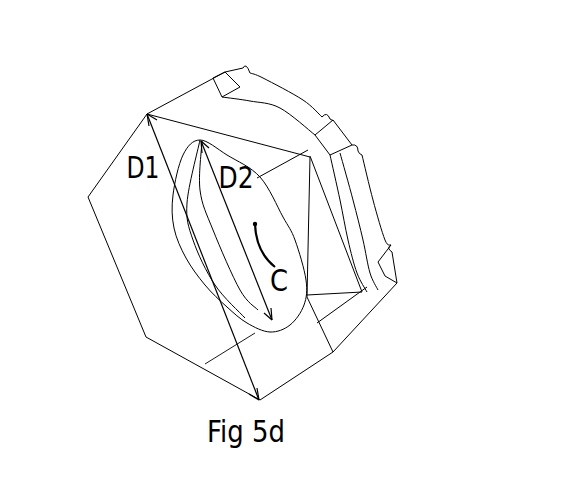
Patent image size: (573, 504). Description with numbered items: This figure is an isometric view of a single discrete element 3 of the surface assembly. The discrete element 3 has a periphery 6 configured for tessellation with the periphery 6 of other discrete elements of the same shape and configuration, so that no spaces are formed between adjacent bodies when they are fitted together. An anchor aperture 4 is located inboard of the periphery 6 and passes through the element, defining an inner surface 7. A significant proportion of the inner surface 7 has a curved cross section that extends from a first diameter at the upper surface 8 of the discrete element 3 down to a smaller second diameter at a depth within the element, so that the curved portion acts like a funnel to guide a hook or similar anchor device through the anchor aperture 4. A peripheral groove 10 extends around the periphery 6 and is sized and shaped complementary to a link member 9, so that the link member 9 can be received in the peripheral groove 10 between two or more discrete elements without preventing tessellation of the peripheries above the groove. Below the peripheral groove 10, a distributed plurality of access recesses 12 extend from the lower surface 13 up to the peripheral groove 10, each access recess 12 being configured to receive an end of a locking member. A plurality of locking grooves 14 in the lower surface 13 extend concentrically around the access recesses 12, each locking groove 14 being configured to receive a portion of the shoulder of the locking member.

The discrete element 3 is at (246, 226).
The anchor aperture 4 is at (296, 293).
The periphery 6 is at (250, 147).
The inner surface 7 is at (185, 320).
The upper surface 8 is at (148, 112).
The link member 9 is at (236, 98).
The peripheral groove 10 is at (350, 245).
The access recess 12 is at (226, 81).
The lower surface 13 is at (303, 100).
The locking groove 14 is at (250, 75).